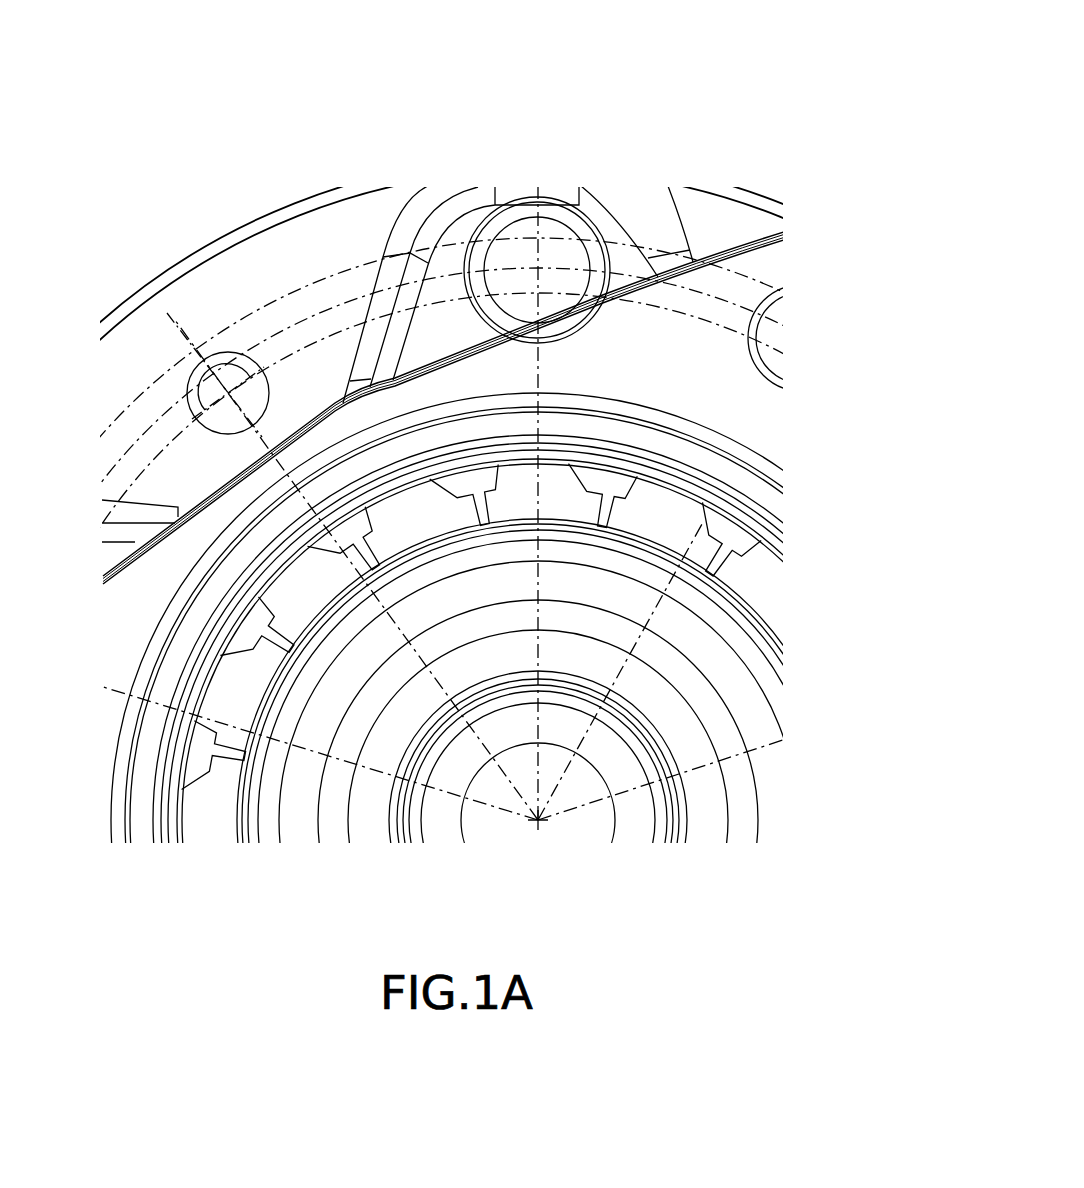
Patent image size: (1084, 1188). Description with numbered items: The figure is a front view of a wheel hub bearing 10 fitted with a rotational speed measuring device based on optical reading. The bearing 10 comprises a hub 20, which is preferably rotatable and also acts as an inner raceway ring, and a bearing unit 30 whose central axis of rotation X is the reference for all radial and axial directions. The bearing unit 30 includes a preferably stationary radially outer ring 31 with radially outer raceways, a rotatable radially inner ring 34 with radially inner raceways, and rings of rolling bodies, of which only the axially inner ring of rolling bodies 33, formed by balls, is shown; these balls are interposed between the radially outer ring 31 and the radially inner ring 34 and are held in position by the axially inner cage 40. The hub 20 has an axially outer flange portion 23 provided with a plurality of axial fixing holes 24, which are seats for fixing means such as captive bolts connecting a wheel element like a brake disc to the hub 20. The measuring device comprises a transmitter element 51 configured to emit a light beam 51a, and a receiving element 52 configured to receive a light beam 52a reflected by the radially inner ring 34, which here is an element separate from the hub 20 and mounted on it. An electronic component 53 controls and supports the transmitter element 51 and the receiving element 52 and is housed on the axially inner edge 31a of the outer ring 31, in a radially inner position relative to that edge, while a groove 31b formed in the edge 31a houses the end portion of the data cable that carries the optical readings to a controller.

The bearing 10 is at (424, 158).
The hub 20 is at (303, 793).
The axially outer flange portion 23 is at (335, 296).
The axial fixing holes 24 is at (502, 298).
The bearing unit 30 is at (868, 506).
The radially outer ring 31 is at (704, 345).
The axially inner edge 31a is at (195, 627).
The groove 31b is at (342, 428).
The axially inner ring of rolling bodies 33 is at (663, 518).
The radially inner ring 34 is at (743, 641).
The axially inner cage 40 is at (730, 535).
The transmitter element 51 is at (327, 516).
The light beam 51a is at (362, 562).
The receiving element 52 is at (428, 466).
The reflected light beam 52a is at (433, 520).
The electronic component 53 is at (363, 493).
The central axis of rotation X is at (546, 827).